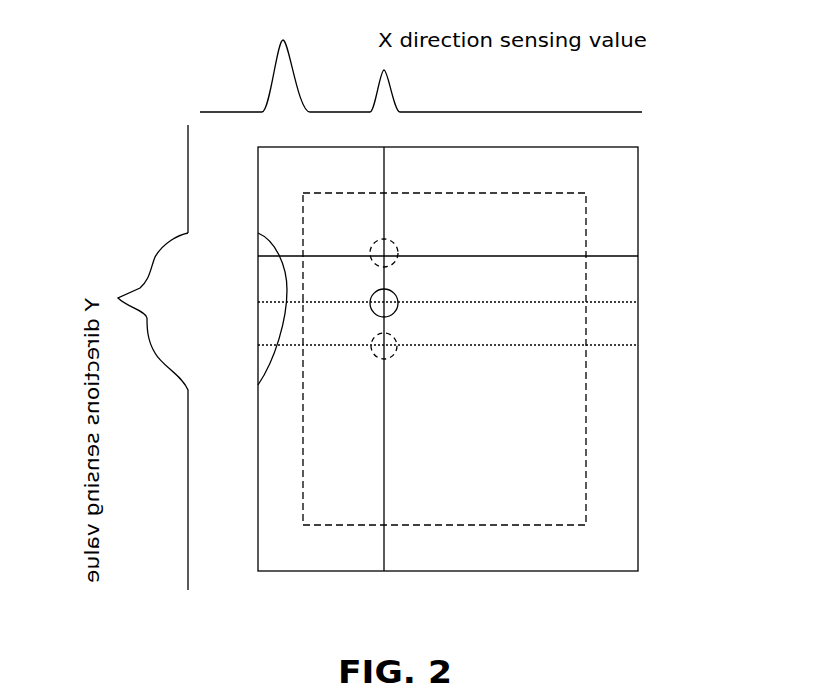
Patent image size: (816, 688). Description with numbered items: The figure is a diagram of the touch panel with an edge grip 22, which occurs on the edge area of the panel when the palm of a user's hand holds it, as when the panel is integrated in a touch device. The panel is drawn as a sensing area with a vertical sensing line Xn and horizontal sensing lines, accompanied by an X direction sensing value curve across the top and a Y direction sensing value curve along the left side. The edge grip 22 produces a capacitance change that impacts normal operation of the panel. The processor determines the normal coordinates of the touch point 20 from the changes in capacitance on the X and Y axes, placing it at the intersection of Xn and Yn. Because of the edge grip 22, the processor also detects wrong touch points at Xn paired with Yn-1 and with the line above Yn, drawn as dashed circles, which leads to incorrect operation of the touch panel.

The touch point 20 is at (394, 298).
The edge grip 22 is at (275, 290).
The X coordinate Xn is at (382, 381).
The Y coordinate Yn is at (468, 305).
The Y coordinate of wrong touch point Yn-1 is at (478, 351).